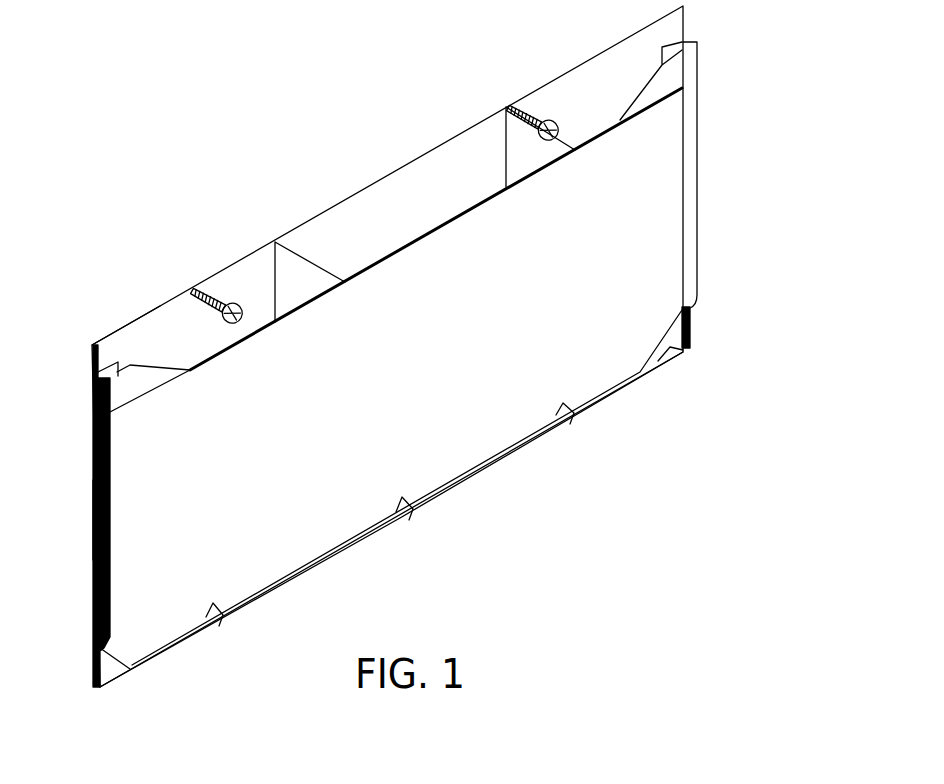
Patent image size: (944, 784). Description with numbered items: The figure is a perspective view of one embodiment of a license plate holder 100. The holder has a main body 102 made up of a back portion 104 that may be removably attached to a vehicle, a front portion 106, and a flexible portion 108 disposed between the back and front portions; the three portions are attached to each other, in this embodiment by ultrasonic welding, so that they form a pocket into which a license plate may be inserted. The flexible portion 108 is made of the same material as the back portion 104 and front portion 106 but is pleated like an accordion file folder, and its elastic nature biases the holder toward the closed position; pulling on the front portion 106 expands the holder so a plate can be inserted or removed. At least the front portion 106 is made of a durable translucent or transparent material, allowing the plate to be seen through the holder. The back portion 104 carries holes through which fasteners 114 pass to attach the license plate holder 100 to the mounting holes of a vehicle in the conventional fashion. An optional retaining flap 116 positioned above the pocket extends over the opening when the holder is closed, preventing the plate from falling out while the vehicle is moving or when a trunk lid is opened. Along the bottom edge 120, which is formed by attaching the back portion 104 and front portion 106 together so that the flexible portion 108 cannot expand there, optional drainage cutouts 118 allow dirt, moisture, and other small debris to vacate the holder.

The license plate holder 100 is at (137, 246).
The main body 102 is at (708, 186).
The back portion 104 is at (128, 348).
The front portion 106 is at (655, 263).
The flexible portion 108 is at (98, 488).
The fastener 114 is at (206, 291).
The retaining flap 116 is at (398, 207).
The drainage cutouts 118 is at (686, 354).
The bottom edge 120 is at (455, 500).